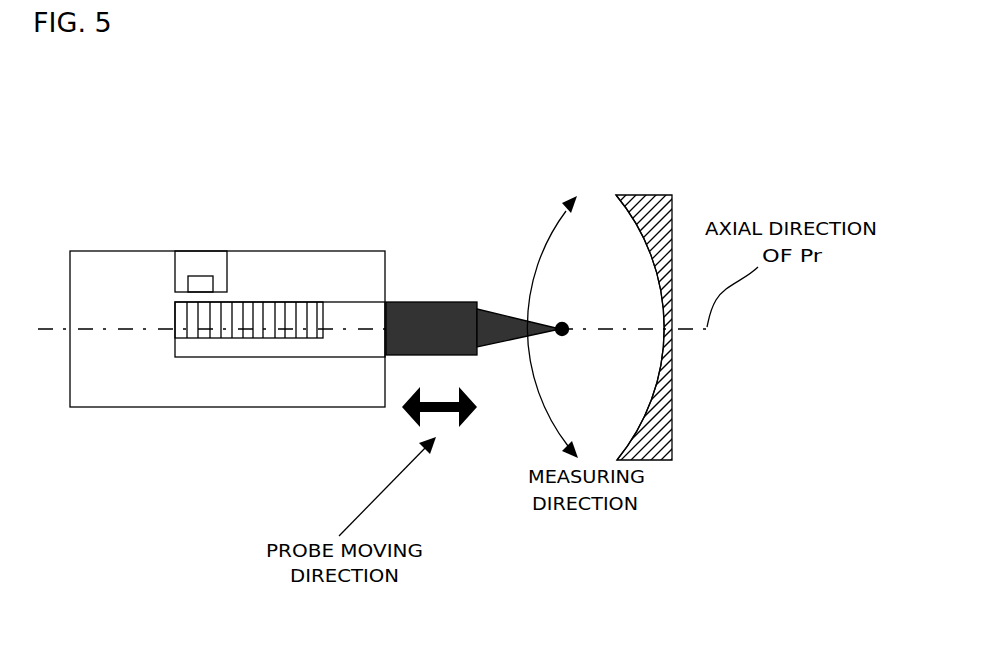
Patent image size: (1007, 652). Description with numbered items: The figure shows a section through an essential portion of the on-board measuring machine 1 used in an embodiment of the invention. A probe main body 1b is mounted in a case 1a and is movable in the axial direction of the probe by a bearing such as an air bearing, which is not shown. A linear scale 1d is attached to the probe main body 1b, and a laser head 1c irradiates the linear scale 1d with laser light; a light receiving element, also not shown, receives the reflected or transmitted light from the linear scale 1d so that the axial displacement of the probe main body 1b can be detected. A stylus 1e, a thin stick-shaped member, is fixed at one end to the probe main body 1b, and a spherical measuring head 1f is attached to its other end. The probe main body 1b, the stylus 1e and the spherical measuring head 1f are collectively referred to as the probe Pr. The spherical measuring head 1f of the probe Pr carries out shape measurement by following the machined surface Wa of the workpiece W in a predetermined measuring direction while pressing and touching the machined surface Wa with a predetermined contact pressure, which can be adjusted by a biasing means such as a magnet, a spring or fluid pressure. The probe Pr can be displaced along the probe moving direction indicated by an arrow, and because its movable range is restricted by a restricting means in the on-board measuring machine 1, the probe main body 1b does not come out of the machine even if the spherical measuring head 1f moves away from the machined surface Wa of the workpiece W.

The on-board measuring machine 1 is at (239, 160).
The case 1a is at (120, 249).
The probe main body 1b is at (430, 302).
The laser head 1c is at (198, 275).
The linear scale 1d is at (280, 302).
The stylus 1e is at (500, 315).
The spherical measuring head 1f is at (560, 322).
The probe Pr is at (398, 173).
The workpiece W is at (688, 207).
The machined surface Wa is at (597, 193).